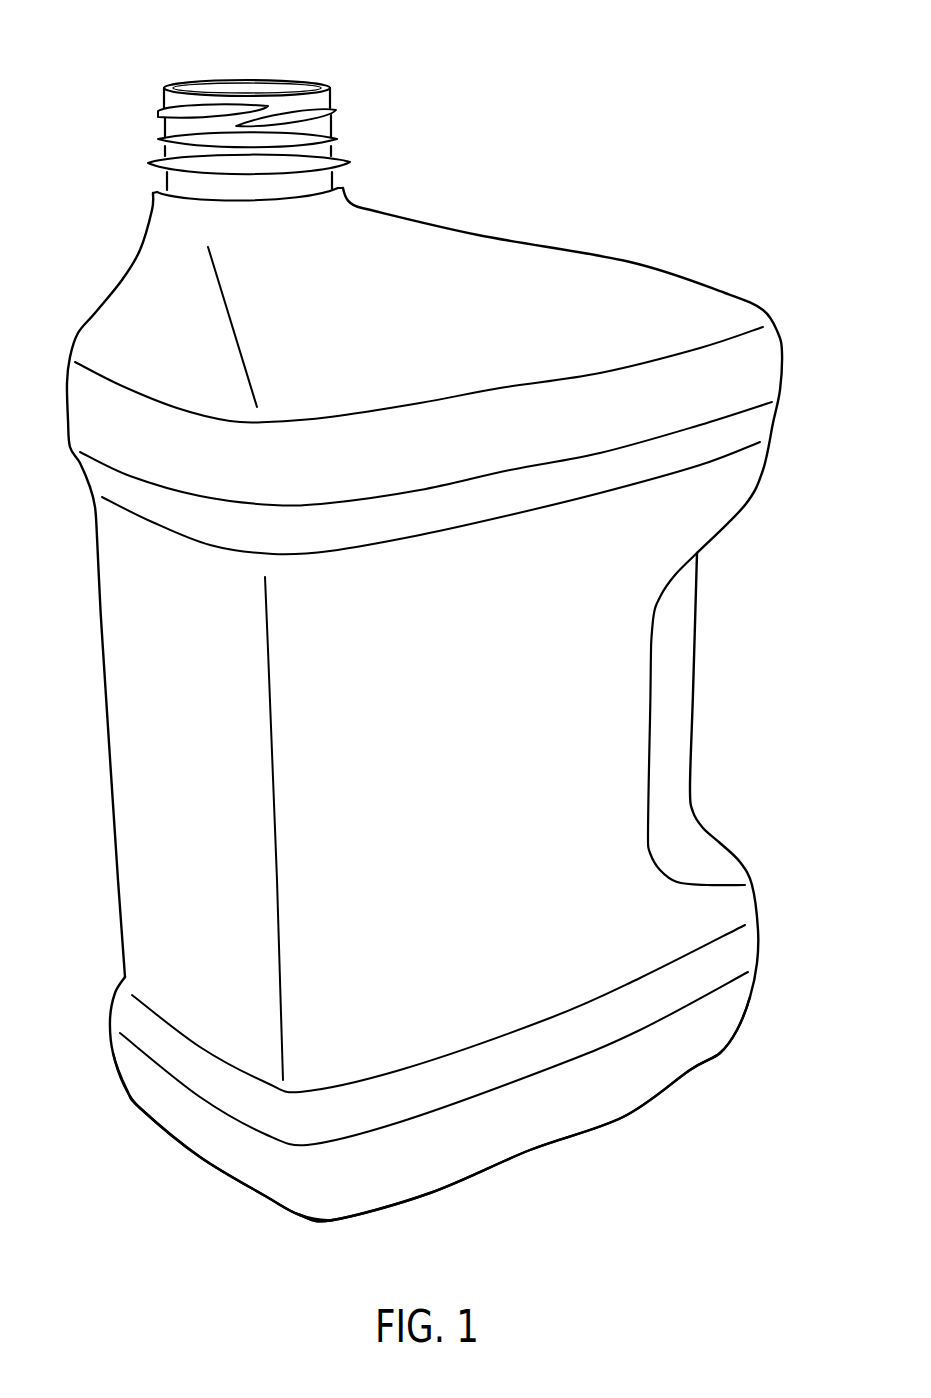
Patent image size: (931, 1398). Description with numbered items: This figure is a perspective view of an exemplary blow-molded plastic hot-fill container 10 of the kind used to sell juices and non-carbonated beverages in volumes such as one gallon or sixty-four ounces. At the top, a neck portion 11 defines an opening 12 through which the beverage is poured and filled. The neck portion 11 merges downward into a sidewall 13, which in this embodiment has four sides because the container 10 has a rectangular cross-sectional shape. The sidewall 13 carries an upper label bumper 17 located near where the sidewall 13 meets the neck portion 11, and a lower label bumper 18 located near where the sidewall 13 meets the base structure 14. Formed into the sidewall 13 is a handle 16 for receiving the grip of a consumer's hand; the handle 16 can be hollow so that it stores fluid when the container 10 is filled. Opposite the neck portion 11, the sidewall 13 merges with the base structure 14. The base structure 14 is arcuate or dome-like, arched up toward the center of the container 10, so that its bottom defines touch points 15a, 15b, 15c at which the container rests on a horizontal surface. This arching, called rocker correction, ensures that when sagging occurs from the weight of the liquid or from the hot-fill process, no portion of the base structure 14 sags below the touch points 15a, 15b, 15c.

The container 10 is at (663, 80).
The neck portion 11 is at (478, 238).
The opening 12 is at (245, 93).
The sidewall 13 is at (618, 598).
The base structure 14 is at (623, 1116).
The touch point 15a is at (720, 1053).
The touch point 15b is at (322, 1220).
The touch point 15c is at (138, 1107).
The handle 16 is at (677, 712).
The upper label bumper 17 is at (760, 423).
The lower label bumper 18 is at (740, 948).